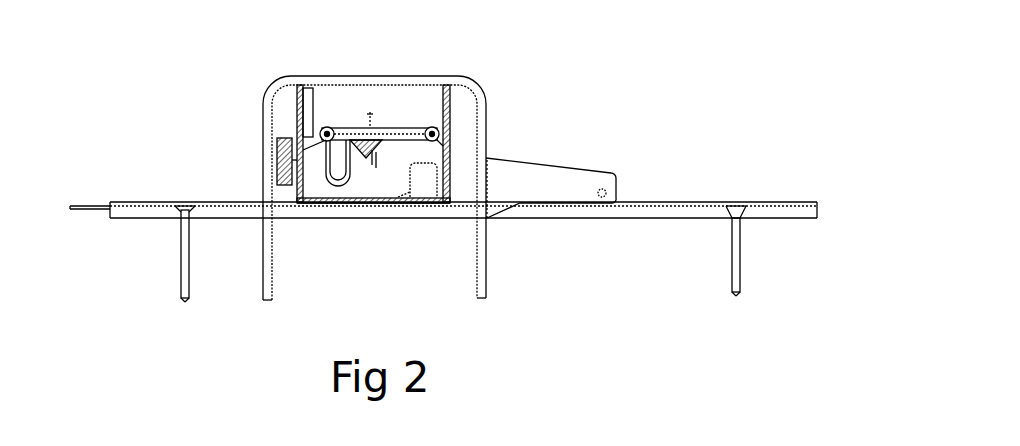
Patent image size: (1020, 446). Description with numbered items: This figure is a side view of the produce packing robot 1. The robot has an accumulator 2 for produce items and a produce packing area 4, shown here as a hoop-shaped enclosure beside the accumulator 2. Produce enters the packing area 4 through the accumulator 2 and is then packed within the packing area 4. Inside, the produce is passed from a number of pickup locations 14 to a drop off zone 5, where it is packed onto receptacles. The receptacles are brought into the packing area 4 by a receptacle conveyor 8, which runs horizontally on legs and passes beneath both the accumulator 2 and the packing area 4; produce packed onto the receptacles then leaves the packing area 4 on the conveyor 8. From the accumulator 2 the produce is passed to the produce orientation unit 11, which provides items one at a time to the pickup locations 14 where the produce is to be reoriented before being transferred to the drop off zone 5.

The produce packing robot 1 is at (528, 65).
The accumulator 2 is at (577, 142).
The produce packing area 4 is at (405, 55).
The drop off zone 5 is at (318, 232).
The receptacle conveyor 8 is at (143, 203).
The produce orientation unit 11 is at (437, 208).
The pickup locations 14 is at (397, 200).